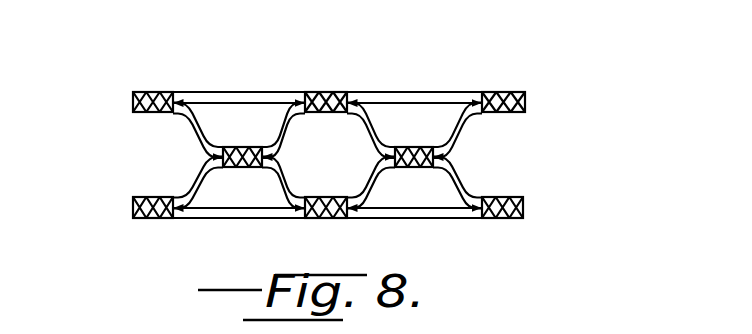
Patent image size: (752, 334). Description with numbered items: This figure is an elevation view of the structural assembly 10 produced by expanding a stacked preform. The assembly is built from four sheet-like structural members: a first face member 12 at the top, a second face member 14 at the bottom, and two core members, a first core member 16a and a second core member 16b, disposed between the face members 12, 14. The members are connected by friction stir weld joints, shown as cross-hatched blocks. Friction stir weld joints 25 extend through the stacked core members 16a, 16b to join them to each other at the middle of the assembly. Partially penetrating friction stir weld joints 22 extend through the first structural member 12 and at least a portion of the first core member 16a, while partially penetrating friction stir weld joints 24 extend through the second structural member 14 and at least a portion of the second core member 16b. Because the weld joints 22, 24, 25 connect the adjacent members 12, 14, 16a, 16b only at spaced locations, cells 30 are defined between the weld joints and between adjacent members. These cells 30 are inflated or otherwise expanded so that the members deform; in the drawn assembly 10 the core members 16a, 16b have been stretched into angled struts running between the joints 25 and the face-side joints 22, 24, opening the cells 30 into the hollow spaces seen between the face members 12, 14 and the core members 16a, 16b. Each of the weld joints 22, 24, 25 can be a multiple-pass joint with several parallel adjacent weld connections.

The structural assembly 10 is at (489, 65).
The first structural member 12 is at (184, 92).
The second structural member 14 is at (190, 219).
The first core member 16a is at (186, 128).
The second core member 16b is at (200, 182).
The partially penetrating friction stir weld joints 22 is at (331, 90).
The partially penetrating friction stir weld joints 24 is at (330, 220).
The friction stir weld joints 25 is at (244, 144).
The cells 30 is at (337, 144).